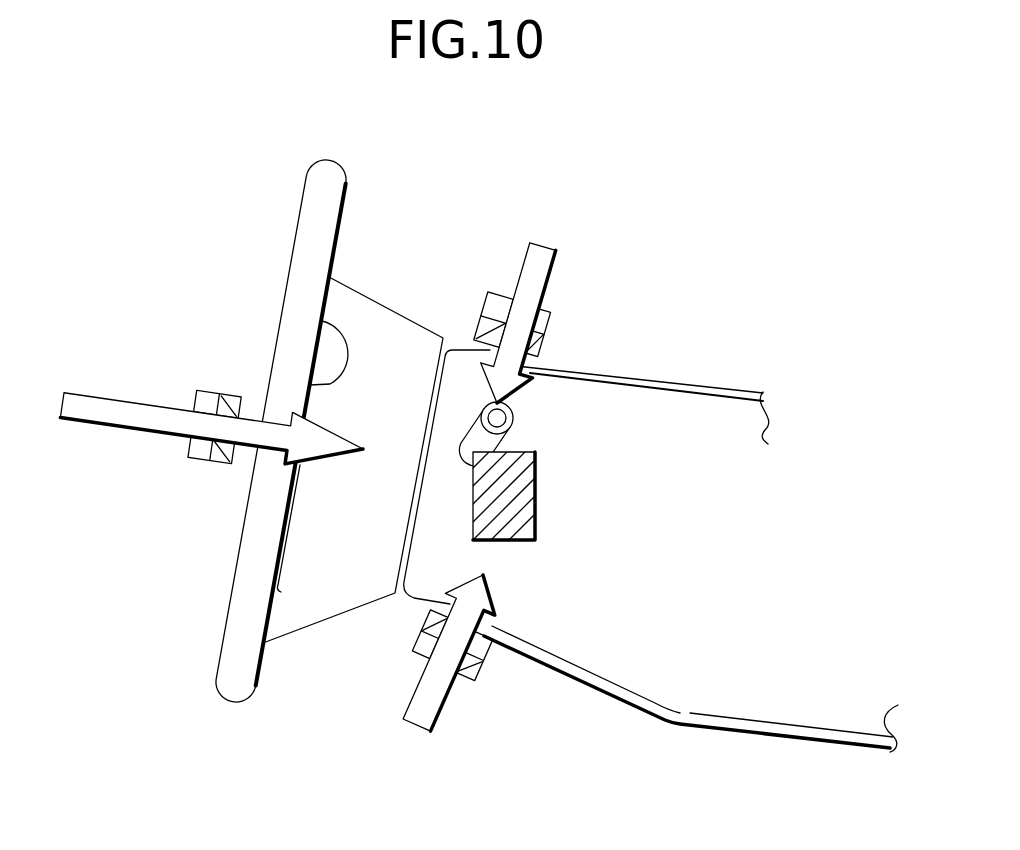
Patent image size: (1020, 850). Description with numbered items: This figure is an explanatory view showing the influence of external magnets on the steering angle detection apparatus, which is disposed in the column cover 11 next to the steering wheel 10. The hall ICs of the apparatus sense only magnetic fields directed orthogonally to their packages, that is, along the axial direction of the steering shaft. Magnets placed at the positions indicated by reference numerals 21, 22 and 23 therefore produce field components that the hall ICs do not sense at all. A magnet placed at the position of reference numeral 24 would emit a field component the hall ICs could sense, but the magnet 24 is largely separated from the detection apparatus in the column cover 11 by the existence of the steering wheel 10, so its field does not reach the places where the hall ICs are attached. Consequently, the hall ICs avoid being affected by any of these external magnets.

The steering wheel 10 is at (312, 186).
The column cover 11 is at (697, 398).
The external magnet position 21 is at (548, 322).
The external magnet position 22 is at (535, 472).
The external magnet position 23 is at (488, 654).
The magnet 24 is at (213, 395).